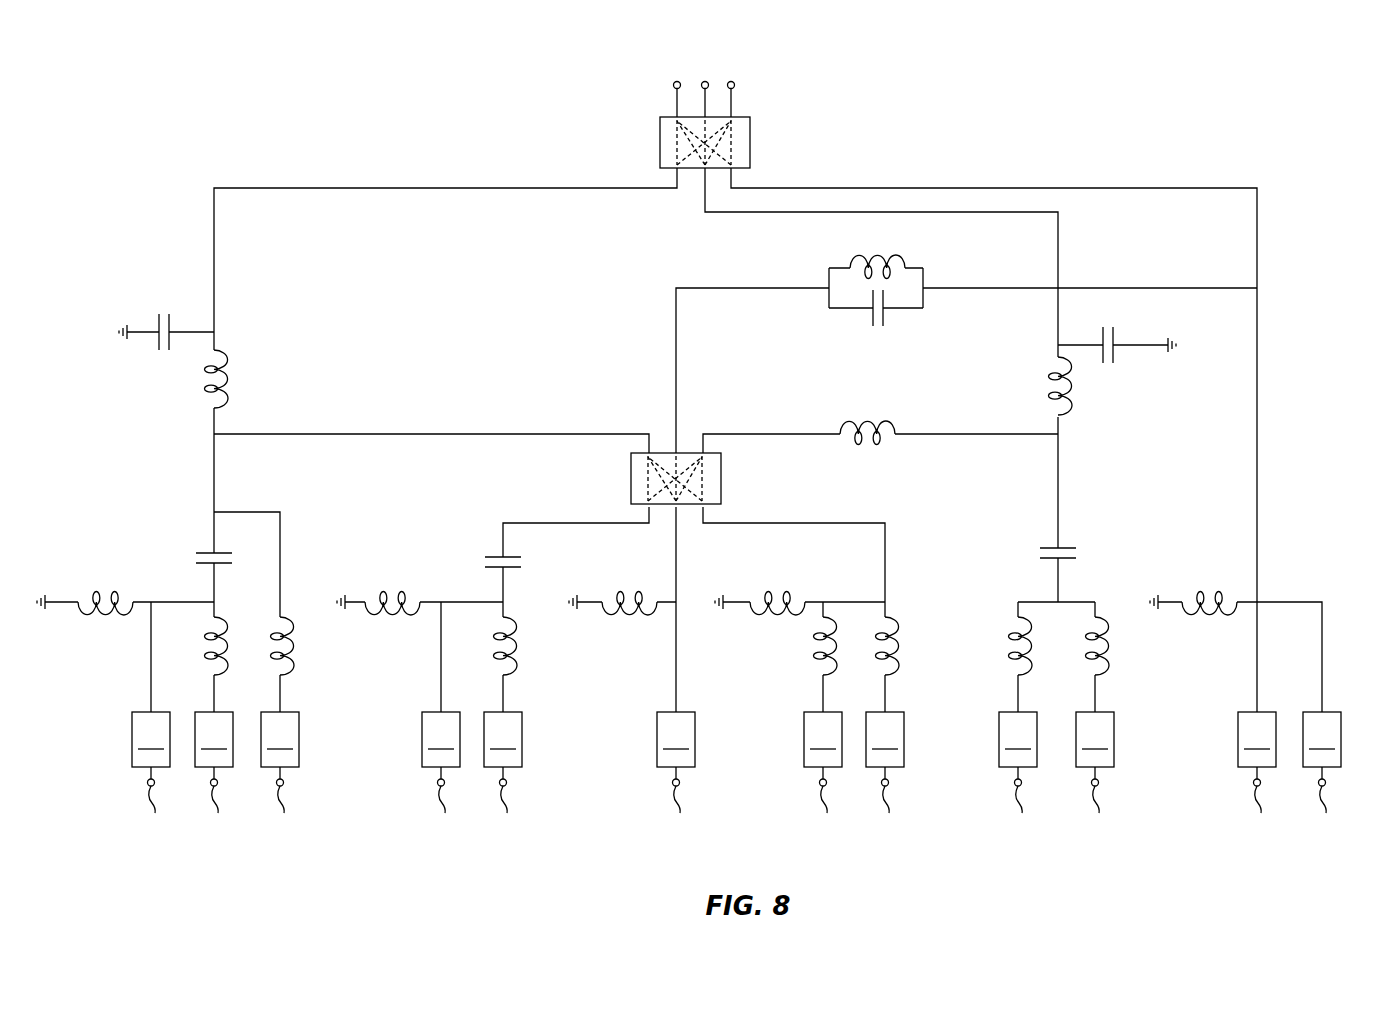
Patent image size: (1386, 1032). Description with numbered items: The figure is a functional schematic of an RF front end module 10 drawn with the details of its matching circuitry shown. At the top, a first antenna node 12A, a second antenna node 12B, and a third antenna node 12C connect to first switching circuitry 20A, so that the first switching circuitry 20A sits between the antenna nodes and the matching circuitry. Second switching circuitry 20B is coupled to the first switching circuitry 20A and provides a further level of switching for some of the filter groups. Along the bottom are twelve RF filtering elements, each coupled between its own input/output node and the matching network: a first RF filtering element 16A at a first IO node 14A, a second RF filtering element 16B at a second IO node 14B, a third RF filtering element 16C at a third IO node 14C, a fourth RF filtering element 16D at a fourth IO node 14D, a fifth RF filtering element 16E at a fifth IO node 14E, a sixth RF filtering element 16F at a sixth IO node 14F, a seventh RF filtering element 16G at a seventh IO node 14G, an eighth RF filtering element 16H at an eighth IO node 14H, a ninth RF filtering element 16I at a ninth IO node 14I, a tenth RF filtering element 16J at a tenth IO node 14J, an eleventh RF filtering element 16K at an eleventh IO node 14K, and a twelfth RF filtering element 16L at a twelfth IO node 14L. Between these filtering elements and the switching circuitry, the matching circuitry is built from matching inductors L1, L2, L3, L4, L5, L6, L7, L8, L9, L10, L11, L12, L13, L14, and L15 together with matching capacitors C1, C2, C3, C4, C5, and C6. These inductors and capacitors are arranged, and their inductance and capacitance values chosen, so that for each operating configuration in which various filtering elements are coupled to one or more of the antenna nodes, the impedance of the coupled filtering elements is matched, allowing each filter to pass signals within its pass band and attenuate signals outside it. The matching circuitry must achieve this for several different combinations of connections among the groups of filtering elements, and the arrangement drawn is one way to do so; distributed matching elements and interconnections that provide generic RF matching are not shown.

The RF front end module 10 is at (1084, 80).
The first antenna node 12A is at (676, 81).
The second antenna node 12B is at (705, 81).
The third antenna node 12C is at (732, 81).
The first switching circuitry 20A is at (752, 136).
The second switching circuitry 20B is at (722, 487).
The first IO node 14A is at (158, 802).
The second IO node 14B is at (220, 802).
The third IO node 14C is at (287, 802).
The fourth IO node 14D is at (448, 802).
The fifth IO node 14E is at (510, 802).
The sixth IO node 14F is at (683, 802).
The seventh IO node 14G is at (830, 802).
The eighth IO node 14H is at (892, 802).
The ninth IO node 14I is at (1025, 802).
The tenth IO node 14J is at (1102, 802).
The eleventh IO node 14K is at (1265, 802).
The twelfth IO node 14L is at (1329, 802).
The first RF filtering element 16A is at (151, 739).
The second RF filtering element 16B is at (214, 739).
The third RF filtering element 16C is at (280, 739).
The fourth RF filtering element 16D is at (441, 739).
The fifth RF filtering element 16E is at (503, 739).
The sixth RF filtering element 16F is at (676, 739).
The seventh RF filtering element 16G is at (823, 739).
The eighth RF filtering element 16H is at (885, 739).
The ninth RF filtering element 16I is at (1018, 739).
The tenth RF filtering element 16J is at (1095, 739).
The eleventh RF filtering element 16K is at (1257, 739).
The twelfth RF filtering element 16L is at (1322, 739).
The matching inductor L1 is at (105, 591).
The matching inductor L2 is at (227, 646).
The matching inductor L3 is at (293, 646).
The matching inductor L4 is at (392, 615).
The matching inductor L5 is at (517, 646).
The matching inductor L6 is at (629, 615).
The matching inductor L7 is at (777, 615).
The matching inductor L8 is at (836, 646).
The matching inductor L9 is at (986, 516).
The matching inductor L10 is at (1036, 646).
The matching inductor L11 is at (1113, 646).
The matching inductor L12 is at (1209, 615).
The matching inductor L13 is at (232, 379).
The matching inductor L14 is at (867, 424).
The matching inductor L15 is at (877, 257).
The matching capacitor C1 is at (221, 547).
The matching capacitor C2 is at (516, 561).
The matching capacitor C3 is at (1070, 553).
The matching capacitor C4 is at (164, 322).
The matching capacitor C5 is at (880, 322).
The matching capacitor C6 is at (1108, 335).